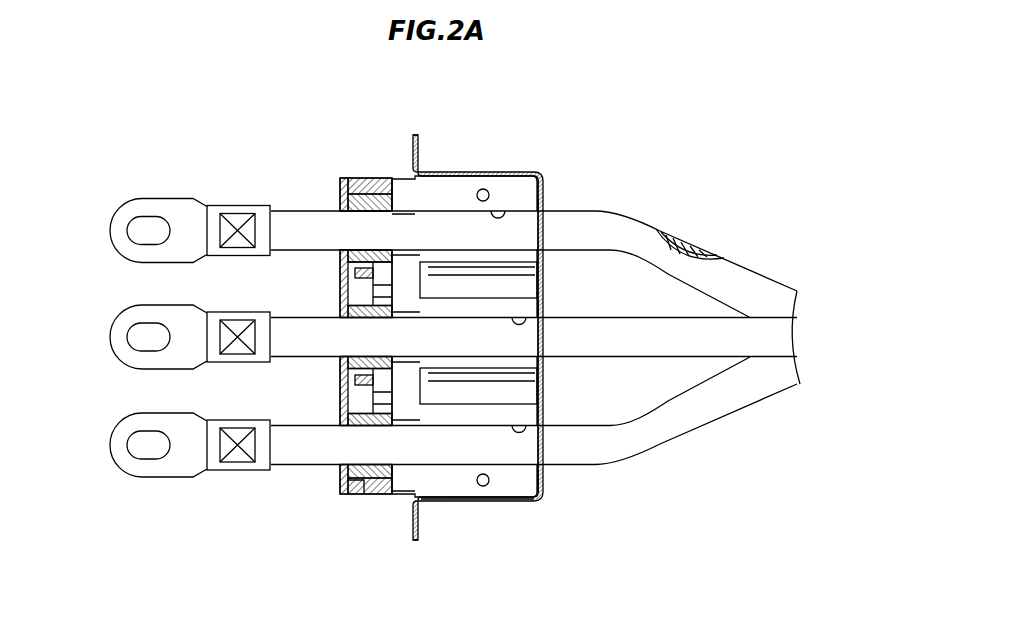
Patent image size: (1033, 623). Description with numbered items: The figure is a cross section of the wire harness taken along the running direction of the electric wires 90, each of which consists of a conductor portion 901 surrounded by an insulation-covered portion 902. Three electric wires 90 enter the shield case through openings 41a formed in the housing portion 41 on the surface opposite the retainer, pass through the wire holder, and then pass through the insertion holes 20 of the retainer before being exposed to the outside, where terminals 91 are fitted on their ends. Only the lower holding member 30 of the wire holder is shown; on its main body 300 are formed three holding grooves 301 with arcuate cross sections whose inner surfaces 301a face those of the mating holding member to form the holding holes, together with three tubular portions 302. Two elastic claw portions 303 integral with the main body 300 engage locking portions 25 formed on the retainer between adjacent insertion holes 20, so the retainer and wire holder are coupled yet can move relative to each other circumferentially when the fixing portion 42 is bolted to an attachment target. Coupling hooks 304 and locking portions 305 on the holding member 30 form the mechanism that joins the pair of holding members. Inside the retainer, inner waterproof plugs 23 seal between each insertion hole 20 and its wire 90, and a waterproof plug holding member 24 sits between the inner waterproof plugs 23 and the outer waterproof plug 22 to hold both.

The insertion hole 20 is at (337, 203).
The outer waterproof plug 22 is at (363, 492).
The inner waterproof plug 23 is at (342, 258).
The waterproof plug holding member 24 is at (387, 488).
The locking portion 25 is at (353, 277).
The holding member 30 is at (543, 497).
The housing portion 41 is at (497, 503).
The opening 41a is at (548, 205).
The fixing portion 42 is at (420, 525).
The electric wire 90 is at (788, 373).
The terminal 91 is at (122, 222).
The main body 300 is at (530, 195).
The holding groove 301 is at (463, 211).
The inner surface 301a is at (502, 213).
The tubular portion 302 is at (410, 210).
The claw portion 303 is at (353, 283).
The coupling hook 304 is at (533, 272).
The locking portion 305 is at (530, 285).
The conductor portion 901 is at (692, 248).
The insulation-covered portion 902 is at (673, 233).